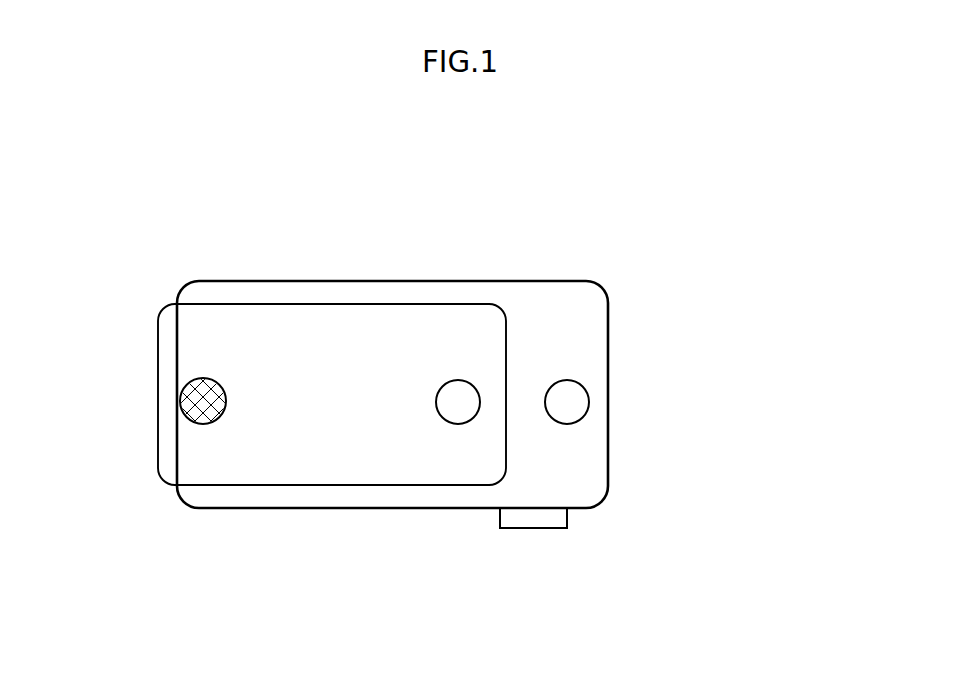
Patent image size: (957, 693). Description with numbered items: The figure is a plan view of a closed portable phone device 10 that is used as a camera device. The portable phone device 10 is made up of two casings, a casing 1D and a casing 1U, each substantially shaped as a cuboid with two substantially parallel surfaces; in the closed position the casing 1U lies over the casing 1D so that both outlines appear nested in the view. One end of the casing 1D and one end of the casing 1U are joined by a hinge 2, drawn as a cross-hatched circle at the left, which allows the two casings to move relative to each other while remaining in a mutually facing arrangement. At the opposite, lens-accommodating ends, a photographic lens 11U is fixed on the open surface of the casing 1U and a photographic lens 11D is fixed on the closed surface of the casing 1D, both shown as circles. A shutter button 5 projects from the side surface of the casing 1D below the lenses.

The portable phone device 10 is at (654, 402).
The casing 1U is at (322, 320).
The casing 1D is at (525, 298).
The hinge 2 is at (182, 411).
The lens 11U is at (462, 425).
The lens 11D is at (567, 425).
The shutter button 5 is at (532, 528).